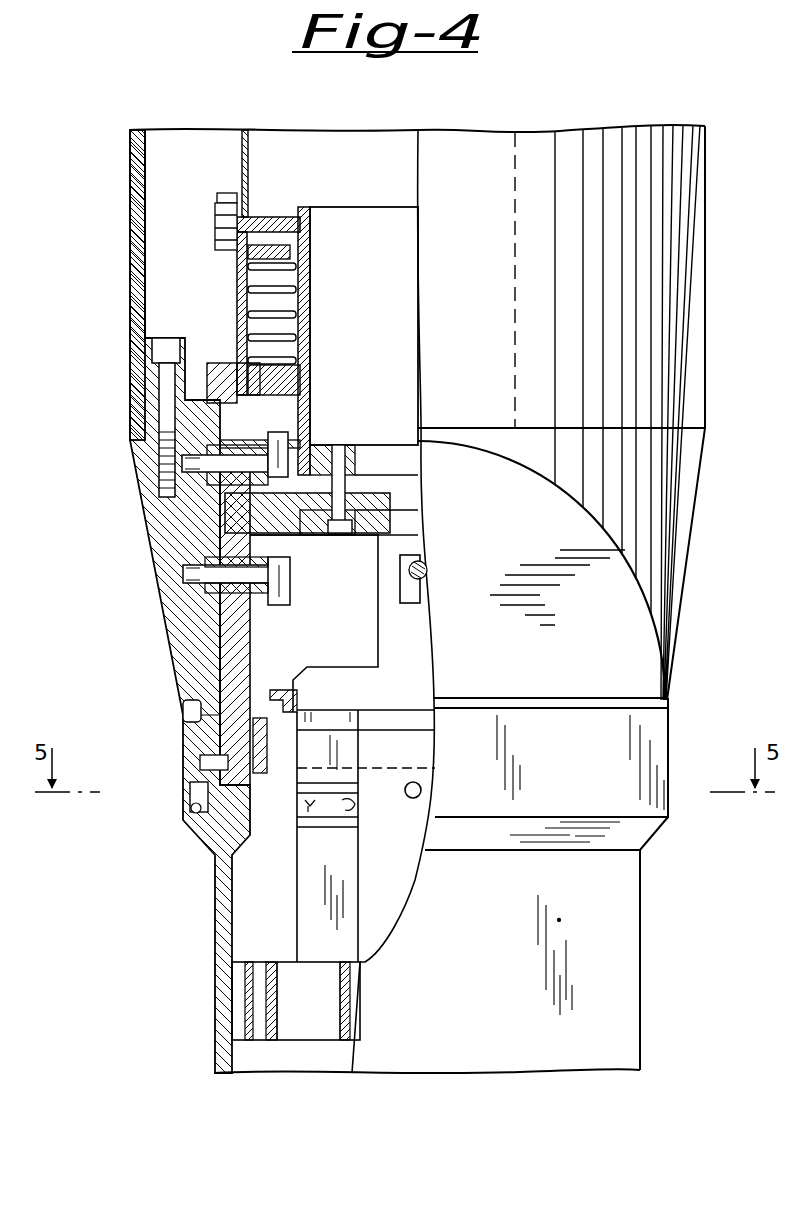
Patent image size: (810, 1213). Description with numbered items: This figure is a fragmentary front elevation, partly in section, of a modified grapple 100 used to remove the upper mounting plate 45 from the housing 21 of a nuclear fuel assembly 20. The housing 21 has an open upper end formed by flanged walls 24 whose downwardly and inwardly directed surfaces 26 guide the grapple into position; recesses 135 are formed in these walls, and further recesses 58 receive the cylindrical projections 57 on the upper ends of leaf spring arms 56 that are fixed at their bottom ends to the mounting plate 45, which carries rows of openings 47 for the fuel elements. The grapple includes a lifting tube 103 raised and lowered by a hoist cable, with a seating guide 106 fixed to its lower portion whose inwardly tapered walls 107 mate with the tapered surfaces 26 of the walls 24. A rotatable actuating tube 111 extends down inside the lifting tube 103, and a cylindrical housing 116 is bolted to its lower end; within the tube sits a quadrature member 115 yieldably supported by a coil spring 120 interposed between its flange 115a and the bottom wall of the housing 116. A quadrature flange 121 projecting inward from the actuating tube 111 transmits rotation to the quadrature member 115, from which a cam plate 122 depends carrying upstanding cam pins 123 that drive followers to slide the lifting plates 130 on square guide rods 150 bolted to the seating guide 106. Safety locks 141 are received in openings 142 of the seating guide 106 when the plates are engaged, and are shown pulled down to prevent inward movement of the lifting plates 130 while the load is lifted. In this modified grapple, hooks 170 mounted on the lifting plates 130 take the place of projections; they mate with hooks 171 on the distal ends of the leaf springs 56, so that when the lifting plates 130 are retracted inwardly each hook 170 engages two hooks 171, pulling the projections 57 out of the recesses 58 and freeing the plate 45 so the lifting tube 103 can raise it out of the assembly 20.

The assembly gripping apparatus 100 is at (98, 118).
The lifting cylindrical tube 103 is at (130, 216).
The seating guide 106 is at (158, 553).
The inwardly tapered walls 107 is at (190, 765).
The cylindrical actuating tube 111 is at (242, 158).
The quadrature member 115 is at (308, 288).
The flange of quadrature member 115a is at (286, 254).
The cylindrical housing 116 is at (237, 276).
The coil spring 120 is at (292, 327).
The quadrature flange 121 is at (276, 216).
The cam plate 122 is at (355, 520).
The cam pins 123 is at (290, 538).
The lifting plates 130 is at (253, 638).
The recesses 135 is at (422, 786).
The safety locks 141 is at (185, 412).
The openings 142 is at (222, 392).
The square guide rods 150 is at (288, 432).
The hooks 170 is at (270, 722).
The hooks 171 is at (346, 712).
The nuclear fuel assembly 20 is at (664, 973).
The housing 21 is at (510, 980).
The flanged walls 24 is at (180, 741).
The downwardly and inwardly directed surfaces 26 is at (190, 718).
The upper mounting plate 45 is at (297, 968).
The openings 47 is at (350, 1005).
The leaf spring arms 56 is at (305, 868).
The cylindrical pad or projection 57 is at (190, 795).
The recesses 58 is at (192, 810).